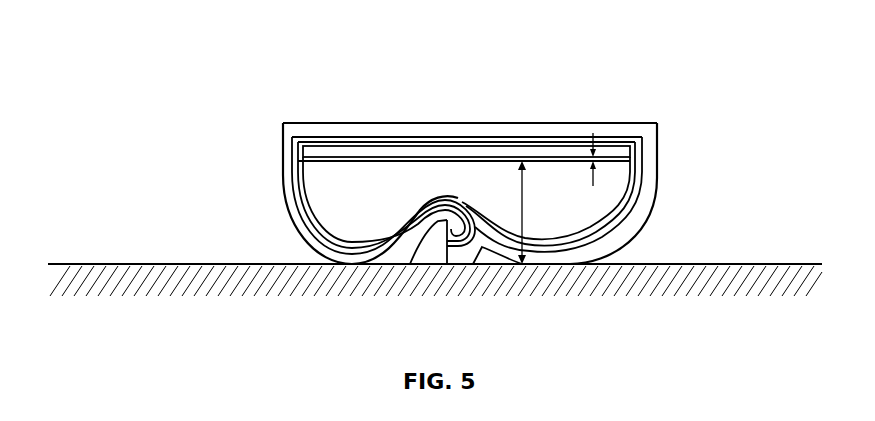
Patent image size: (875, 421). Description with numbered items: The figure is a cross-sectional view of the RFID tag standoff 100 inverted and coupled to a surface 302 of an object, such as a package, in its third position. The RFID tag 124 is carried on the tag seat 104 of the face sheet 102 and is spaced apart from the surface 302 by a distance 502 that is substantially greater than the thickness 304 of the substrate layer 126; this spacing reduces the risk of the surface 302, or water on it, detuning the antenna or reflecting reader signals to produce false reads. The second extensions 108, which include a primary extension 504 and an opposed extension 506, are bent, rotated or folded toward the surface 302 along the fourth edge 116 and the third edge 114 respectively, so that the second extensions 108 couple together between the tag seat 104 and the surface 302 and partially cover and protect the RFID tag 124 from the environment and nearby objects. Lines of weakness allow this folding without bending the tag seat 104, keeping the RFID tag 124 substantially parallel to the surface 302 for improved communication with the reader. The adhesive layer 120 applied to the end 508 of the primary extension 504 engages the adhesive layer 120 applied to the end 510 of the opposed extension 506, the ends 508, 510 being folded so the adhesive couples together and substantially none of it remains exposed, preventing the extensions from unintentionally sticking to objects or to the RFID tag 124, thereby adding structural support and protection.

The RFID tag standoff 100 is at (154, 43).
The face sheet 102 is at (388, 127).
The tag seat 104 is at (608, 122).
The second extensions 108 is at (466, 218).
The third edge 114 is at (658, 123).
The fourth edge 116 is at (283, 123).
The adhesive layer 120 is at (637, 165).
The RFID tag 124 is at (363, 151).
The substrate layer 126 is at (305, 160).
The surface 302 is at (102, 264).
The thickness 304 is at (592, 159).
The distance 502 is at (521, 184).
The primary extension 504 is at (284, 210).
The opposed extension 506 is at (652, 210).
The end of the primary extension 508 is at (436, 228).
The end of the opposed extension 510 is at (474, 250).